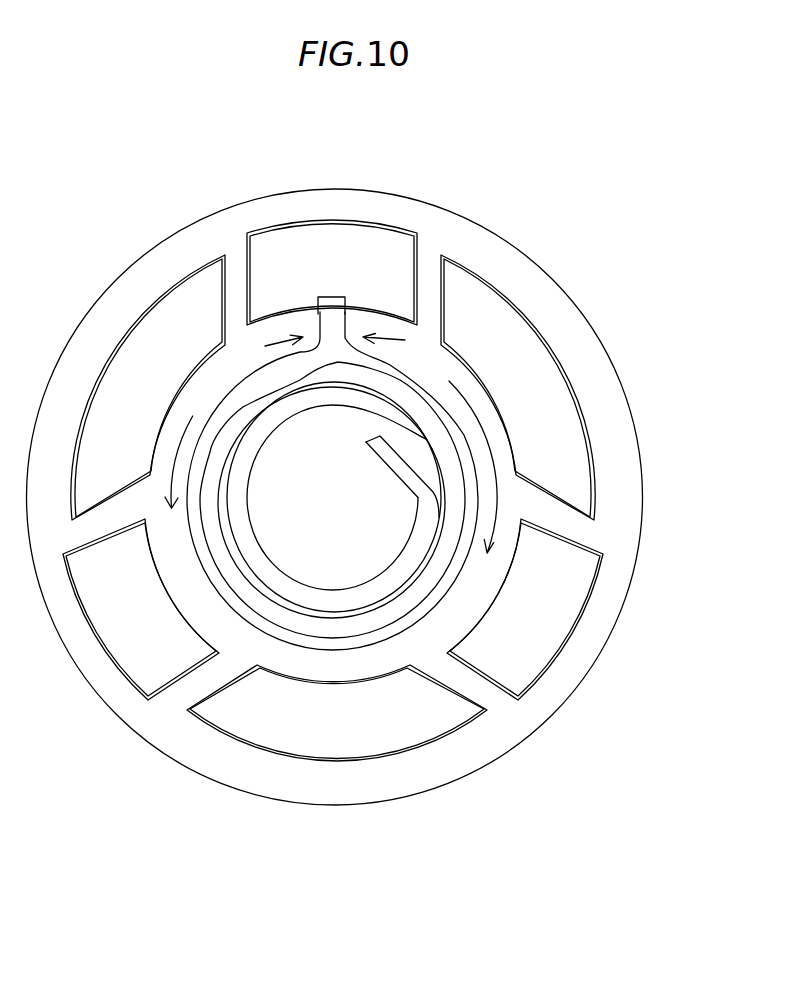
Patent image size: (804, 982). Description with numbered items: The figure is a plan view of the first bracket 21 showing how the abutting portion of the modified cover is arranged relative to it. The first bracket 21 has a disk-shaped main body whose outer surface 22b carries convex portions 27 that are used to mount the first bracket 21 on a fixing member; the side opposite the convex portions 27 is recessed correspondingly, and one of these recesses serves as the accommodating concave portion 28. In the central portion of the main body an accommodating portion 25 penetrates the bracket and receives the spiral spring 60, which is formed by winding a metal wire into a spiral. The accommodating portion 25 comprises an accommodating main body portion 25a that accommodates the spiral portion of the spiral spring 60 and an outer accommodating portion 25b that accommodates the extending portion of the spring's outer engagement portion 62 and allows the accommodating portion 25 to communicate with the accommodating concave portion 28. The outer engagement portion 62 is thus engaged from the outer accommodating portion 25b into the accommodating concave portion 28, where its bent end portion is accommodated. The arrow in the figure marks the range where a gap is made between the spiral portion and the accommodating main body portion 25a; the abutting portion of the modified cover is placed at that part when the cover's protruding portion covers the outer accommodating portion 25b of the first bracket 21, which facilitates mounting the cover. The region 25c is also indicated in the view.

The first bracket 21 is at (532, 241).
The outer surface of the main body portion 22b is at (628, 488).
The accommodating portion 25 is at (330, 580).
The accommodating main body portion 25a is at (197, 547).
The outer accommodating portion 25b is at (338, 312).
The right groove portion 25c is at (440, 401).
The convex portions 27 is at (336, 233).
The accommodating concave portion 28 is at (395, 220).
The spiral spring 60 is at (319, 420).
The outer engagement portion 62 is at (330, 326).